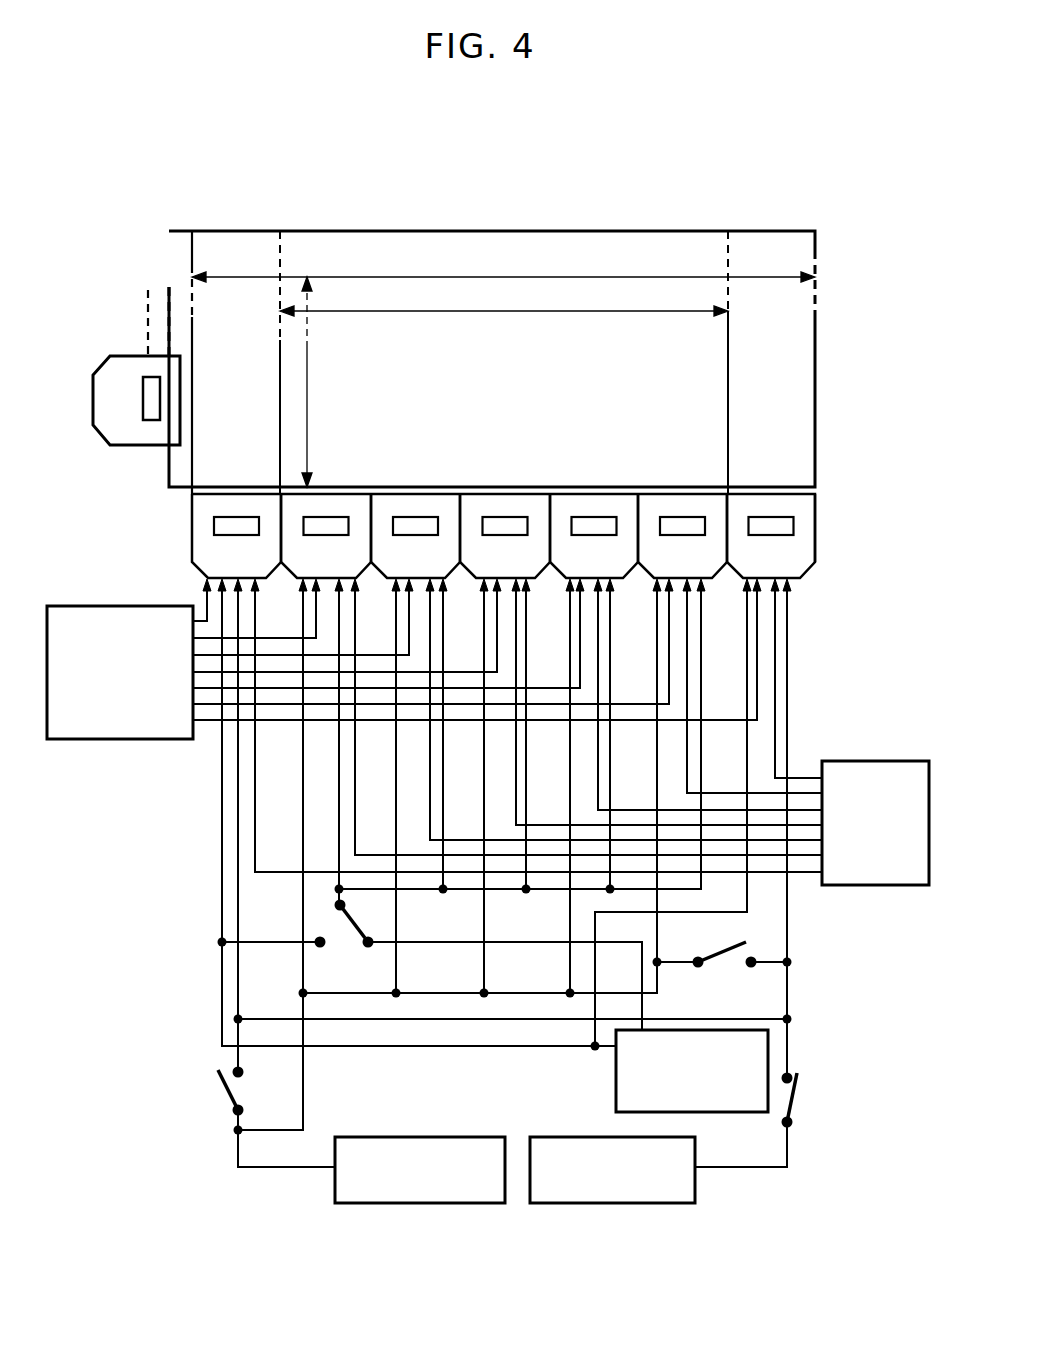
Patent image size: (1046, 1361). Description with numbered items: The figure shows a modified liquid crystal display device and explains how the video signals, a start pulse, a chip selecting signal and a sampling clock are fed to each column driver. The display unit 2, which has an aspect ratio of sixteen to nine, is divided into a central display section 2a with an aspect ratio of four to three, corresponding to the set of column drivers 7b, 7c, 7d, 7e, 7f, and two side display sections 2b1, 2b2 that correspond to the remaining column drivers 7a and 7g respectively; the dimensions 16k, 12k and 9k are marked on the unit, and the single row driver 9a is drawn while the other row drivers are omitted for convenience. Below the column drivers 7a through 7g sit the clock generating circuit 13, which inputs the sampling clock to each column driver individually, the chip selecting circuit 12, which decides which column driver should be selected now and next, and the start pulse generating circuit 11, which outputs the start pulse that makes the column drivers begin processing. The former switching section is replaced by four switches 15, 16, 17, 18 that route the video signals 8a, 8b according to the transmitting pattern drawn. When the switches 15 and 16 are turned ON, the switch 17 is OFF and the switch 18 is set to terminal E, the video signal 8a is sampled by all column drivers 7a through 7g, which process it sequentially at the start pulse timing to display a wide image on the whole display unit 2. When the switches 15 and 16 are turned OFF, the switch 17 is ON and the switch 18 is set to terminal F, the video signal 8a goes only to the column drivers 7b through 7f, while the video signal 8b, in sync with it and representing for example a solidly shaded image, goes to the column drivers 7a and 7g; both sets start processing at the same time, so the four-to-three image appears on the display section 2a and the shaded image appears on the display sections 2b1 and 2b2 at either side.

The display unit 2 is at (755, 200).
The display section 2a is at (453, 243).
The display section 2b1 is at (222, 247).
The display section 2b2 is at (757, 250).
The column driver 7a is at (221, 503).
The column driver 7b is at (321, 503).
The column driver 7c is at (407, 503).
The column driver 7d is at (502, 503).
The column driver 7e is at (586, 503).
The column driver 7f is at (667, 503).
The column driver 7g is at (752, 503).
The video signal 8a is at (390, 1137).
The video signal 8b is at (590, 1137).
The row driver 9a is at (128, 356).
The offset distance 9k is at (321, 382).
The start pulse generating circuit 11 is at (727, 1112).
The chip selecting circuit 12 is at (848, 770).
The central region width 12k is at (504, 301).
The clock generating circuit 13 is at (152, 728).
The switch 15 is at (218, 1093).
The switch 16 is at (735, 970).
The total reading width 16k is at (503, 267).
The switch 17 is at (801, 1108).
The switch 18 is at (342, 944).